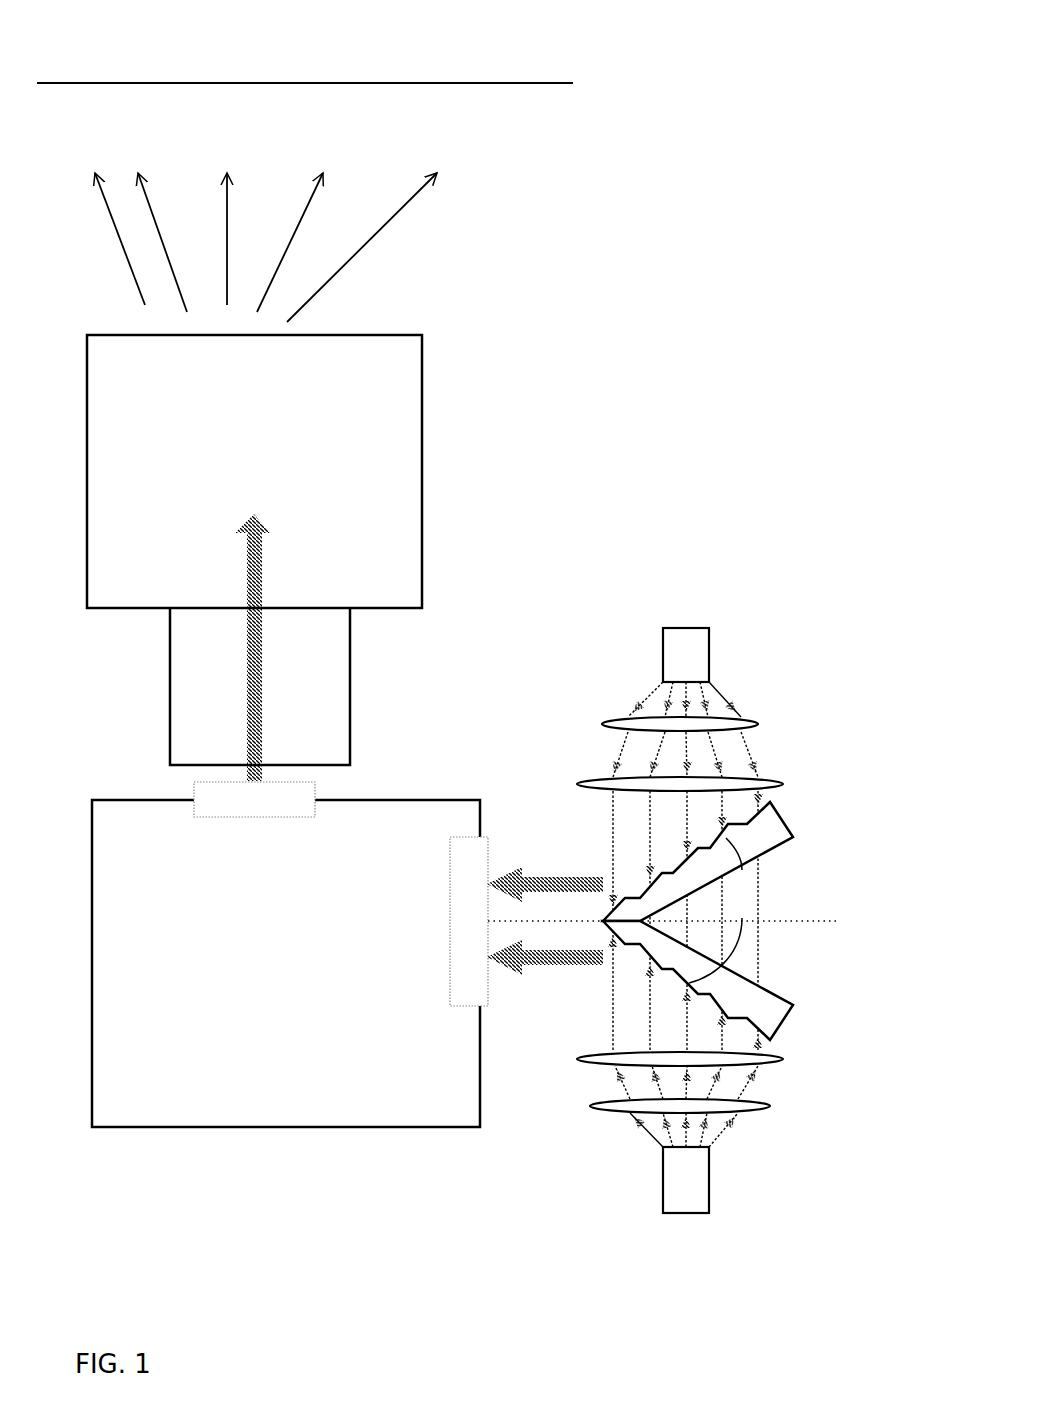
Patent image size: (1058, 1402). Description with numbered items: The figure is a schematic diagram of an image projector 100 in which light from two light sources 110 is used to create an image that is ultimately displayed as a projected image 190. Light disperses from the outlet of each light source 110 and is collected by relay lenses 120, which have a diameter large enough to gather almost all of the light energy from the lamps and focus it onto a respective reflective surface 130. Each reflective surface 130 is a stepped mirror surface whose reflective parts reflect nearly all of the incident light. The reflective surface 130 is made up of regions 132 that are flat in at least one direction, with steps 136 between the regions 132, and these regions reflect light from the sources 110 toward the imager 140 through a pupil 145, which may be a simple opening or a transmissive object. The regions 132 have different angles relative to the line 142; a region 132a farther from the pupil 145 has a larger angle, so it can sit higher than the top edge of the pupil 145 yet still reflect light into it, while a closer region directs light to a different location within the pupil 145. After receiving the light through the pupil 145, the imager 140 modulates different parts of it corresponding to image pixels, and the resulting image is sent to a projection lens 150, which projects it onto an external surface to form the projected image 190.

The image projector 100 is at (828, 388).
The light source 110 is at (692, 635).
The relay lenses 120 is at (770, 1077).
The reflective surface 130 is at (747, 975).
The region 132 is at (726, 910).
The region farther from the pupil 132a is at (772, 806).
The step 136 is at (628, 896).
The imager 140 is at (286, 954).
The line 142 is at (842, 919).
The pupil 145 is at (467, 888).
The projection lens 150 is at (254, 558).
The projected image 190 is at (305, 168).